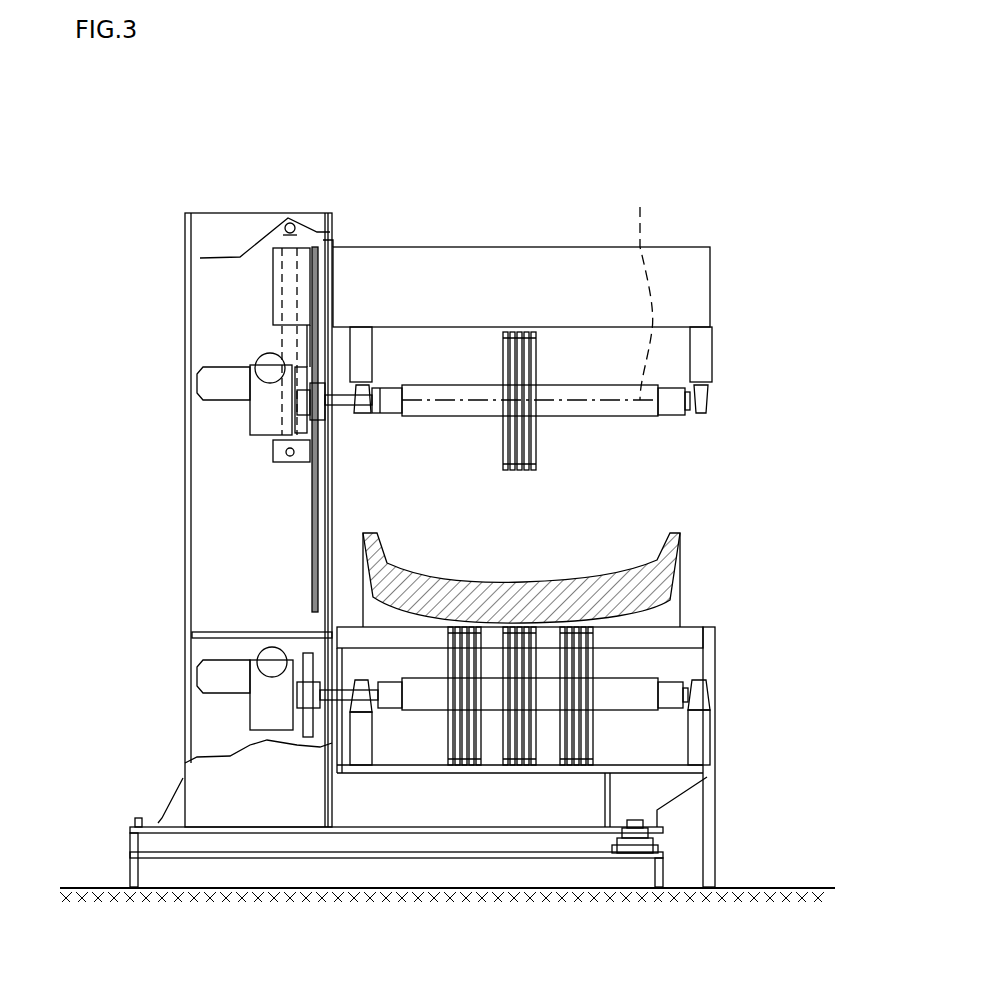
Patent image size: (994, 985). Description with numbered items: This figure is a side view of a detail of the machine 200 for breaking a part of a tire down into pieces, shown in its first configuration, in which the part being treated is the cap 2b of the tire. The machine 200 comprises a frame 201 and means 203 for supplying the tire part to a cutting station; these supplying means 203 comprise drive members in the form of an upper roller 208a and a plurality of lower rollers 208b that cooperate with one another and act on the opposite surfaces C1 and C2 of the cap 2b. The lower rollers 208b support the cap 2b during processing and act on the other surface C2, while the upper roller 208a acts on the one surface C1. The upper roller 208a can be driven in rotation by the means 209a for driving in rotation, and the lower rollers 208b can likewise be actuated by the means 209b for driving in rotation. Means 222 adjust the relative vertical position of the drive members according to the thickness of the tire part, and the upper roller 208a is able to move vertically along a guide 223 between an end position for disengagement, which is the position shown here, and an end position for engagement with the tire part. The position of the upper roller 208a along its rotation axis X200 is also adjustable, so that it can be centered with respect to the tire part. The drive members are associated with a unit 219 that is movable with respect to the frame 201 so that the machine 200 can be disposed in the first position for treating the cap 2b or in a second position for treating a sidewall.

The unit 219 is at (208, 210).
The machine 200 is at (510, 230).
The rotation axis X200 is at (656, 290).
The means for adjusting the relative position of the drive members 222 is at (278, 303).
The means for driving in rotation 209a is at (218, 405).
The guide 223 is at (310, 537).
The means for supplying the part of the tire 203 is at (648, 420).
The upper roller 208a is at (543, 440).
The lower rollers 208b is at (568, 748).
The cap 2b is at (618, 568).
The surface C1 is at (437, 572).
The other surface C2 is at (613, 627).
The means for driving in rotation 209b is at (222, 697).
The frame 201 is at (127, 868).